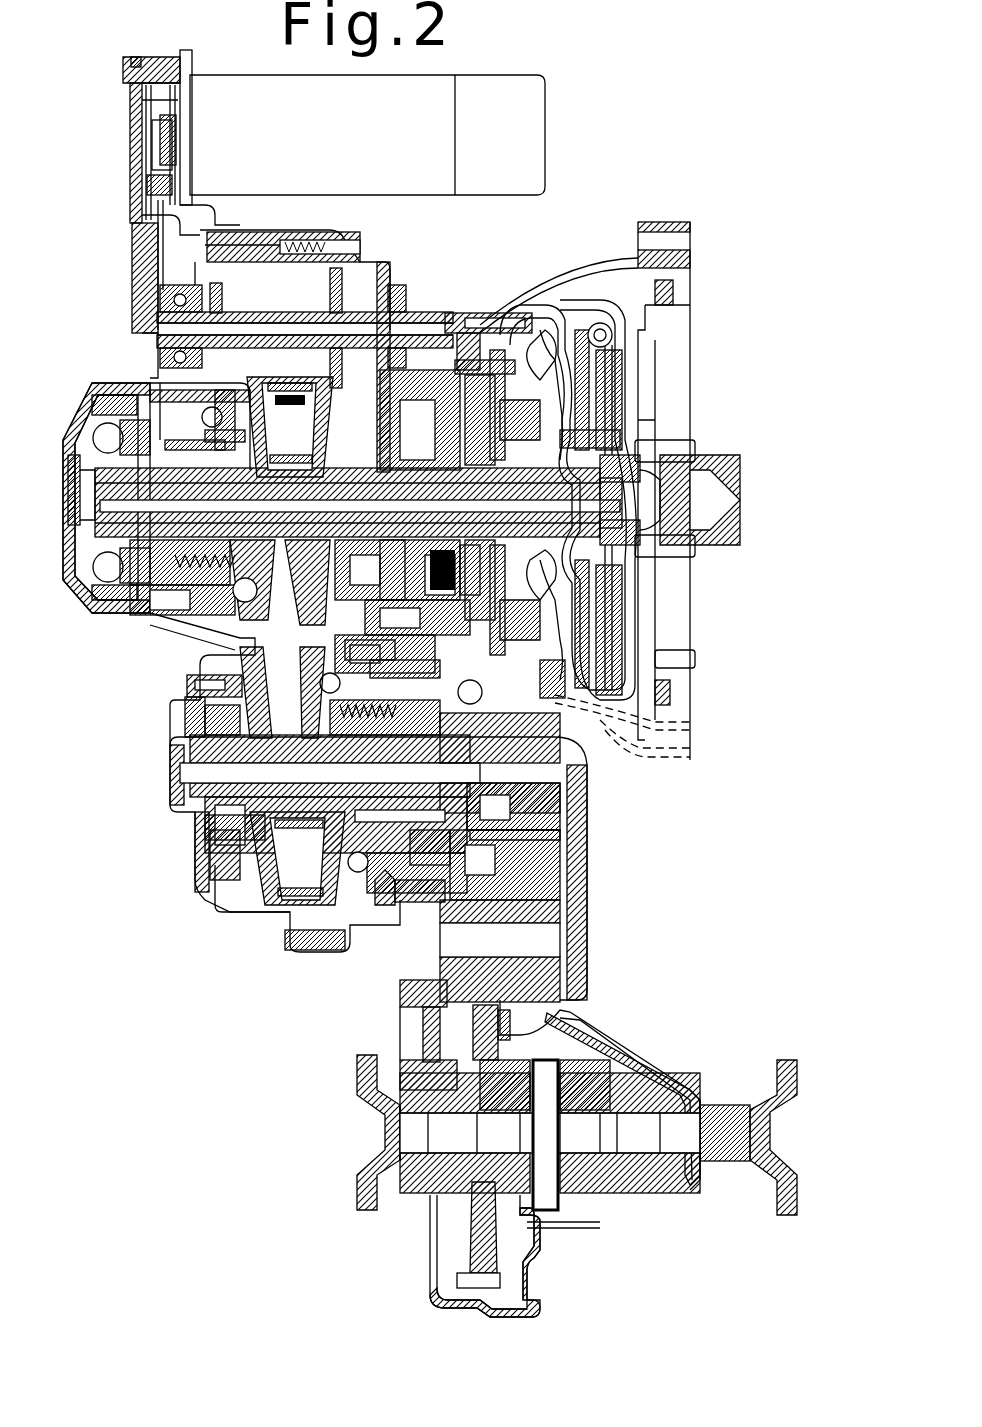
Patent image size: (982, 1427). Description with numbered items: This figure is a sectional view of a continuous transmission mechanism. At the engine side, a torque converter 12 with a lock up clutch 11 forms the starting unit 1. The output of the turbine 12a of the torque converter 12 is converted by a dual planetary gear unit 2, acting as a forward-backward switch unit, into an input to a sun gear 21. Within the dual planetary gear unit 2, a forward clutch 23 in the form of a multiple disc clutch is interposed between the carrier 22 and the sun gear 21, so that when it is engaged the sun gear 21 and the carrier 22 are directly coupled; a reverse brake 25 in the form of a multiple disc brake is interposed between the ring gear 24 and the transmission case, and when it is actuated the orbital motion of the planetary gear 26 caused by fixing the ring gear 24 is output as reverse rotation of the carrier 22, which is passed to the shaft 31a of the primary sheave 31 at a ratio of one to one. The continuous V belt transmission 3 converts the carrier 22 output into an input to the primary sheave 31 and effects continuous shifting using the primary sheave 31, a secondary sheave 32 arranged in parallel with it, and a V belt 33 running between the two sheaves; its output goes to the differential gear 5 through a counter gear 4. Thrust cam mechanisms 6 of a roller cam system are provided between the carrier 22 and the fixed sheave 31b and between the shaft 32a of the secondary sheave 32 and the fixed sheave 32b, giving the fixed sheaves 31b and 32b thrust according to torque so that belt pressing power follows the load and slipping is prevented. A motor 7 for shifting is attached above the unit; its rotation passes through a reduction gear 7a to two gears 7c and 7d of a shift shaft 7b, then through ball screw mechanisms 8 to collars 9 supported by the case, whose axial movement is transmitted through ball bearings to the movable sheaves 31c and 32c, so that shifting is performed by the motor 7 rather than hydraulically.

The starting unit 1 is at (582, 290).
The dual planetary gear unit 2 is at (432, 377).
The continuous V belt transmission (CVT) 3 is at (238, 642).
The counter gear 4 is at (575, 1040).
The differential gear 5 is at (595, 1205).
The thrust cam mechanism 6 is at (320, 428).
The motor 7 is at (385, 180).
The reduction gear 7a is at (130, 232).
The shift shaft 7b is at (290, 310).
The gear 7c is at (205, 280).
The gear 7d is at (357, 278).
The ball screw mechanism 8 is at (120, 385).
The collar 9 is at (160, 385).
The lock up clutch 11 is at (600, 300).
The torque converter 12 is at (548, 360).
The turbine 12a is at (565, 340).
The sun gear 21 is at (355, 582).
The carrier 22 is at (440, 600).
The forward clutch 23 is at (442, 375).
The ring gear 24 is at (370, 672).
The reverse brake 25 is at (410, 684).
The planetary gear 26 is at (468, 592).
The primary sheave 31 is at (304, 553).
The shaft 31a is at (68, 525).
The fixed sheave 31b is at (318, 390).
The movable sheave 31c is at (265, 393).
The secondary sheave 32 is at (288, 697).
The shaft 32a is at (192, 820).
The fixed sheave 32b is at (220, 912).
The movable sheave 32c is at (310, 648).
The V belt 33 is at (300, 895).